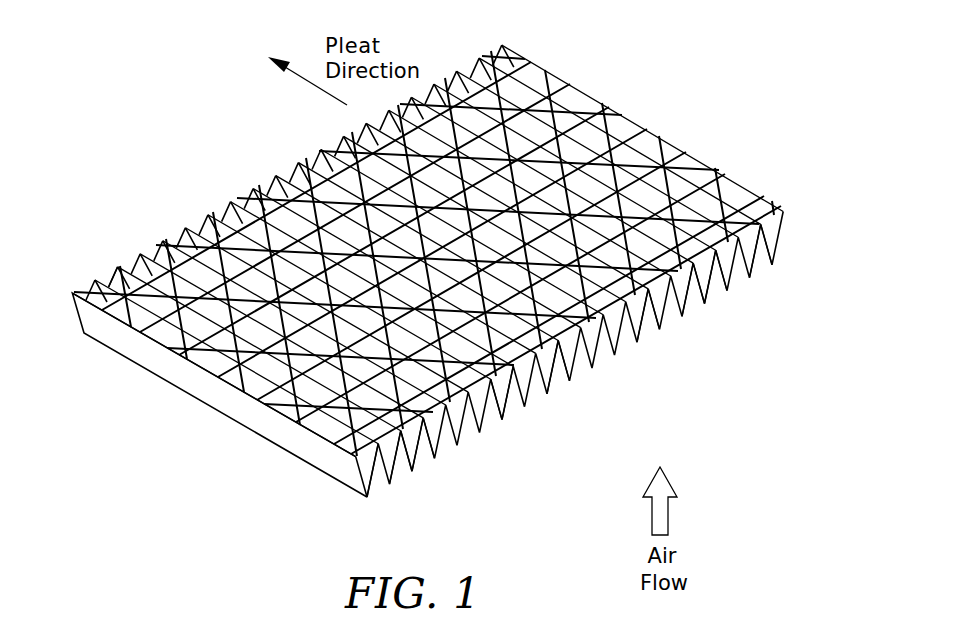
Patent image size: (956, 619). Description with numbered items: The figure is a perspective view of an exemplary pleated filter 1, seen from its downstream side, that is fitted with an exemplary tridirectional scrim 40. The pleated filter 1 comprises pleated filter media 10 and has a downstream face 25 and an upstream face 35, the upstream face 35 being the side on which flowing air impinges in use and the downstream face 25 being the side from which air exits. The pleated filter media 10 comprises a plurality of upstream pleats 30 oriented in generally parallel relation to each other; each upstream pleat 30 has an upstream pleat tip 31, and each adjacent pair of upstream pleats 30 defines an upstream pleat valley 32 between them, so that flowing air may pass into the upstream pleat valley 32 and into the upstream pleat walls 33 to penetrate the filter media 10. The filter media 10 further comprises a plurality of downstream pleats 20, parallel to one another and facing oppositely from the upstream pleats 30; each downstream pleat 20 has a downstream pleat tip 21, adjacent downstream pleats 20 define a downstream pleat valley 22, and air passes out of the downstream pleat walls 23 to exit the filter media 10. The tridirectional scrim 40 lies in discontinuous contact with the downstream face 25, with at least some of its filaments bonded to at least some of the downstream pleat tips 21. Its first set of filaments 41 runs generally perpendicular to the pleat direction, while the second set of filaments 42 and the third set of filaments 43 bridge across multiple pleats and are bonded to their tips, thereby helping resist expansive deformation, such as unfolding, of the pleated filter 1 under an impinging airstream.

The pleated filter 1 is at (656, 57).
The pleated filter media 10 is at (318, 470).
The downstream pleats 20 is at (398, 468).
The downstream pleat tip 21 is at (425, 460).
The downstream pleat valley 22 is at (377, 475).
The downstream pleat walls 23 is at (503, 383).
The downstream face 25 is at (125, 285).
The upstream pleats 30 is at (642, 335).
The upstream pleat tip 31 is at (558, 382).
The upstream pleat valley 32 is at (693, 293).
The upstream pleat walls 33 is at (712, 298).
The upstream face 35 is at (760, 250).
The tridirectional scrim 40 is at (588, 117).
The filaments of the first set 41 is at (665, 138).
The filaments of the second set 42 is at (476, 92).
The filaments of the third set 43 is at (316, 192).